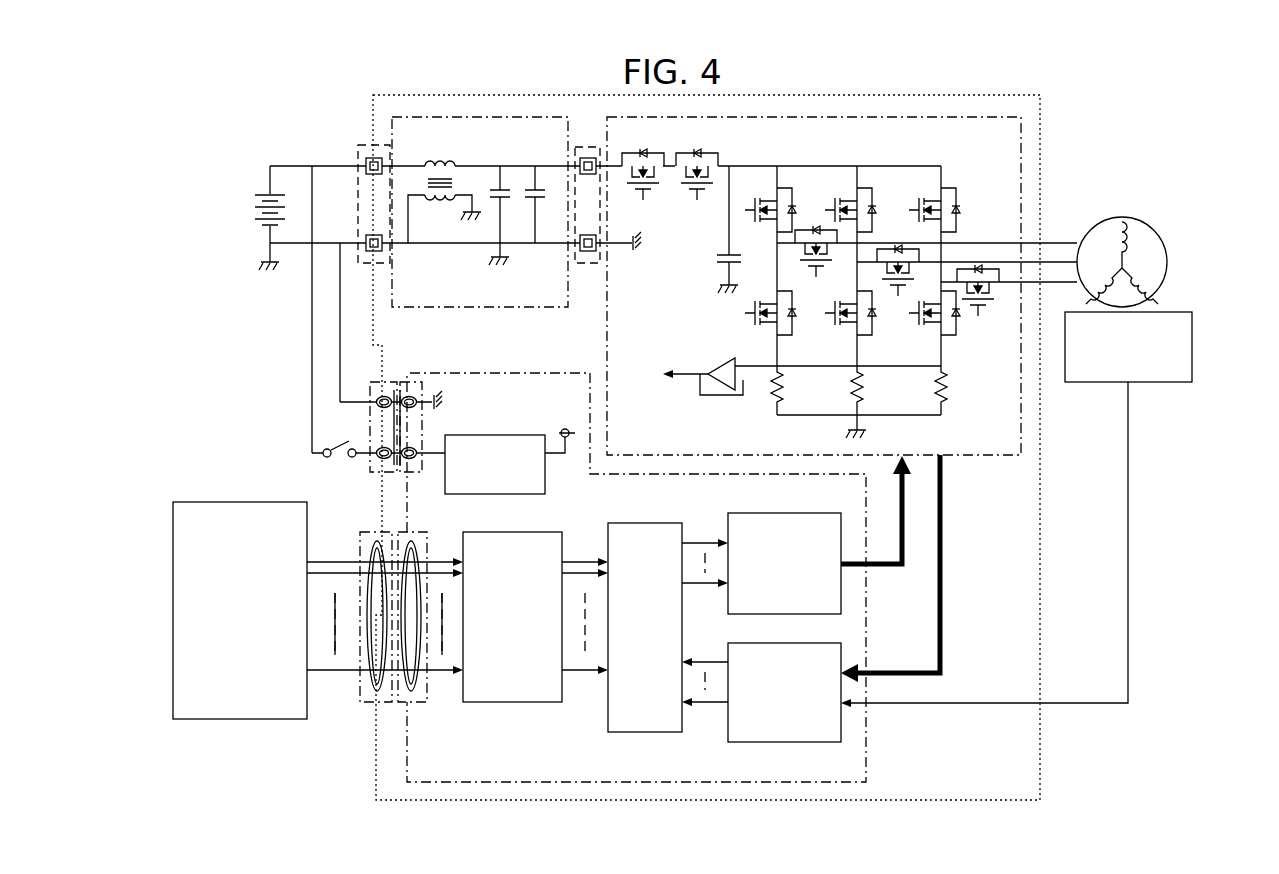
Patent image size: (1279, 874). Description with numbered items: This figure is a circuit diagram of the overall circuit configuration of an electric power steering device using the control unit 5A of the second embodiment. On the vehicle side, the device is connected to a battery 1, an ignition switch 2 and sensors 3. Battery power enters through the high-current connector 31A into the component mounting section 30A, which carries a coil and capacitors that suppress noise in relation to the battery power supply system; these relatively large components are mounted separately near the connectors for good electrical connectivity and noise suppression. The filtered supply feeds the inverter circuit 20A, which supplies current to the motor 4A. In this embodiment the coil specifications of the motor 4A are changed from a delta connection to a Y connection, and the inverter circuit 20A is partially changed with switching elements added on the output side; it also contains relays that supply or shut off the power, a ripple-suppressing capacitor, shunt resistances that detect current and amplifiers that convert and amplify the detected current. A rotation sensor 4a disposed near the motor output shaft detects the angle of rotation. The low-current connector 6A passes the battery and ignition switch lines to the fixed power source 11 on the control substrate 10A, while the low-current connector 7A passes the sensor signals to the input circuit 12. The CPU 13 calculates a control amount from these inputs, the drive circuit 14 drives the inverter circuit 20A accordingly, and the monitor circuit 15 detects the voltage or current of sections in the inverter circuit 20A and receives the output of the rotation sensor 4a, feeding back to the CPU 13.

The battery 1 is at (258, 203).
The ignition switch 2 is at (338, 441).
The sensors 3 is at (173, 635).
The motor 4A is at (1158, 226).
The rotation sensor 4a is at (1192, 341).
The control unit 5A is at (1042, 137).
The connector 6A is at (372, 397).
The connector 7A is at (362, 688).
The control substrate 10A is at (407, 735).
The fixed power source 11 is at (482, 435).
The input circuit 12 is at (472, 703).
The CPU 13 is at (606, 712).
The drive circuit 14 is at (841, 592).
The monitor circuit 15 is at (841, 727).
The inverter circuit 20A is at (1021, 193).
The component mounting section 30A is at (393, 125).
The connector 31A is at (362, 160).